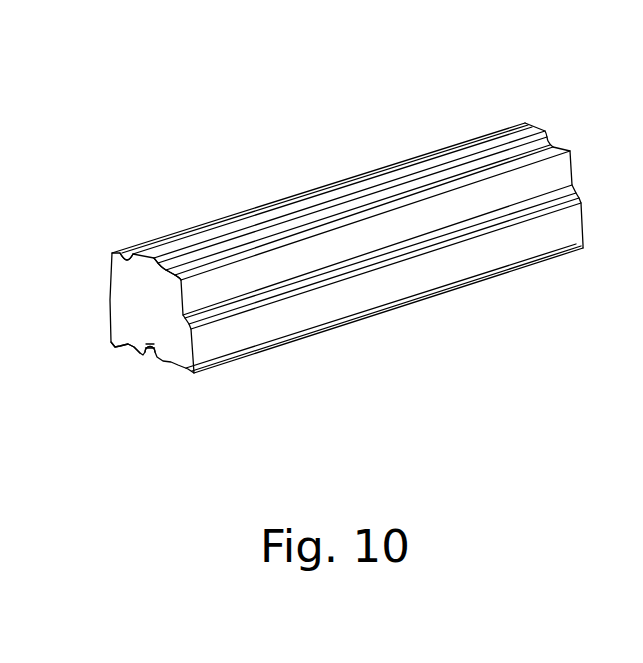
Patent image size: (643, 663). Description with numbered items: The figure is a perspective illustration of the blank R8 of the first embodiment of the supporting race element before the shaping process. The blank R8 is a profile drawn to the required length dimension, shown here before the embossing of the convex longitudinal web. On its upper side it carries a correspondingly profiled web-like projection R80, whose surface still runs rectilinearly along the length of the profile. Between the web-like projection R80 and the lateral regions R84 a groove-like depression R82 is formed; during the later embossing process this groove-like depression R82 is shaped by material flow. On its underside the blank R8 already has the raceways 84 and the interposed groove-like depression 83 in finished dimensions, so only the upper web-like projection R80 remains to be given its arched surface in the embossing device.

The blank R8 is at (311, 214).
The web-like projection R80 is at (268, 210).
The groove-like depression R82 is at (180, 263).
The lateral region R84 is at (111, 253).
The raceway 84 is at (130, 349).
The groove-like depression 83 is at (150, 353).